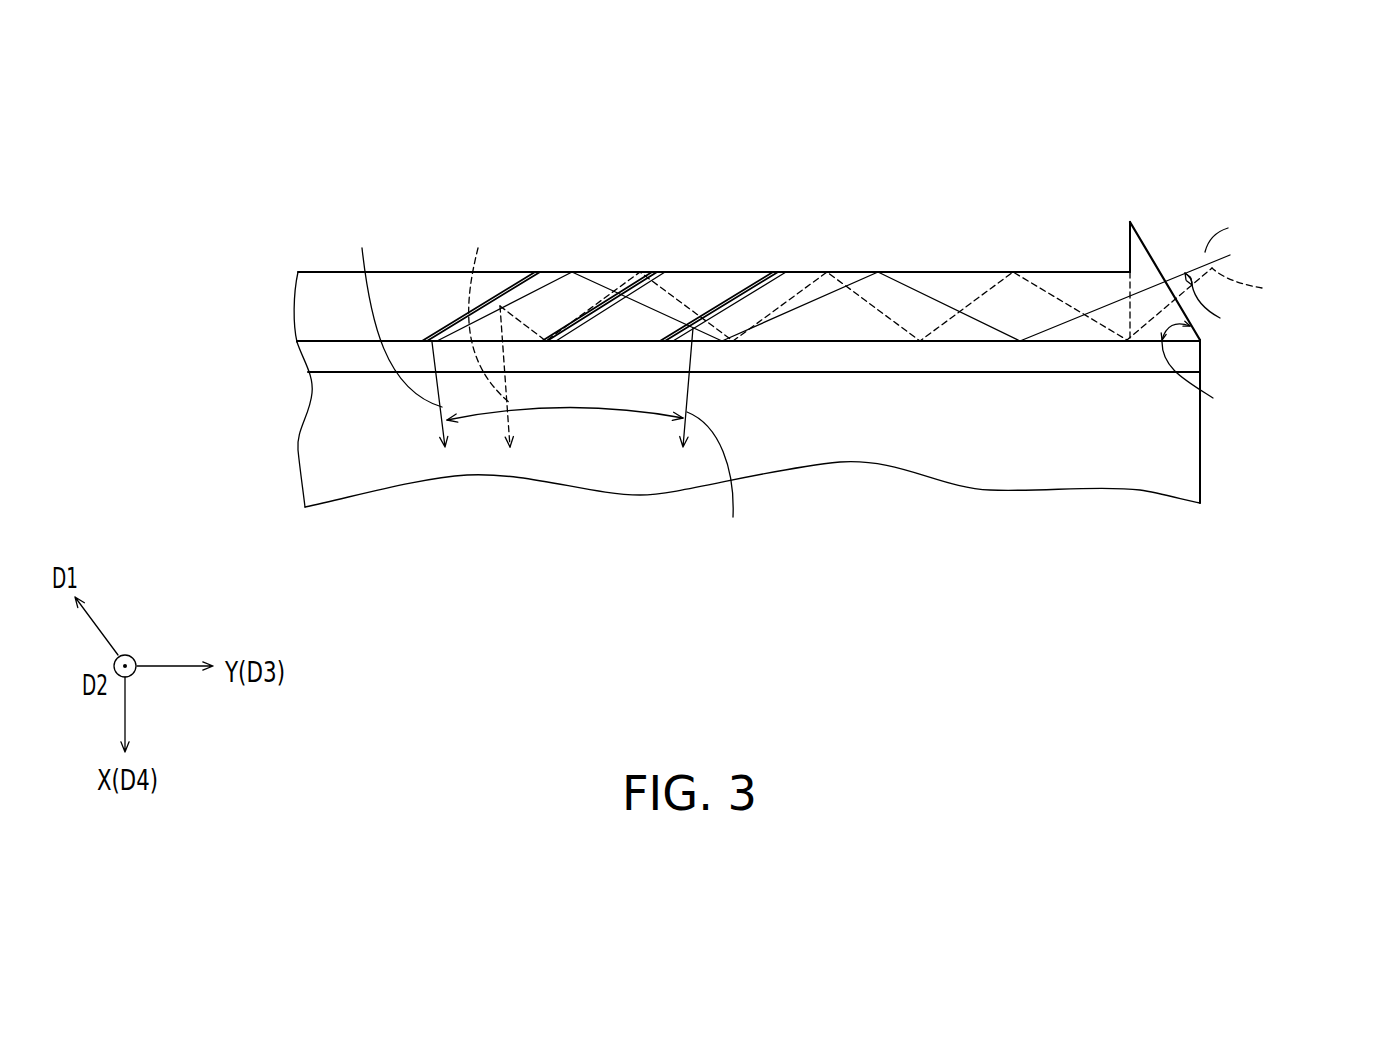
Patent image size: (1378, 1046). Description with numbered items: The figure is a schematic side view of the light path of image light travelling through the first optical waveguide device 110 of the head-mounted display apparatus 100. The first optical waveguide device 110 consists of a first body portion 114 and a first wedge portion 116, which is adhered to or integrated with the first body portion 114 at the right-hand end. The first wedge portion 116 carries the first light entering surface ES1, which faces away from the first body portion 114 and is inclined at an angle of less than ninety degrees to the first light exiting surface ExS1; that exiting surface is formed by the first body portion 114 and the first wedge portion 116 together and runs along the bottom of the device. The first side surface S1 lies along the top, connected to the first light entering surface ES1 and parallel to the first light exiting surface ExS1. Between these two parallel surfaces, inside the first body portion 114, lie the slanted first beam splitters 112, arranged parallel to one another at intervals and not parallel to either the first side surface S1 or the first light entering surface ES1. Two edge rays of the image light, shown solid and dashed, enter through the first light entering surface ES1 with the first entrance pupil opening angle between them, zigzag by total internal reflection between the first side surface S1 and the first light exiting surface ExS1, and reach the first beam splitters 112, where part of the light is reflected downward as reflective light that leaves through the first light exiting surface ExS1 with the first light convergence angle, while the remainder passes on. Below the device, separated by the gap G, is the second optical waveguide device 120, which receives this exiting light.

The head-mounted display apparatus 100 is at (1302, 628).
The first optical waveguide device 110 is at (1134, 88).
The first beam splitters 112 is at (630, 290).
The first body portion 114 is at (1067, 285).
The first wedge portion 116 is at (1140, 260).
The second optical waveguide device 120 is at (900, 440).
The first side surface S1 is at (989, 268).
The first light entering surface ES1 is at (1152, 236).
The first light exiting surface ExS1 is at (814, 358).
The gap G is at (293, 342).